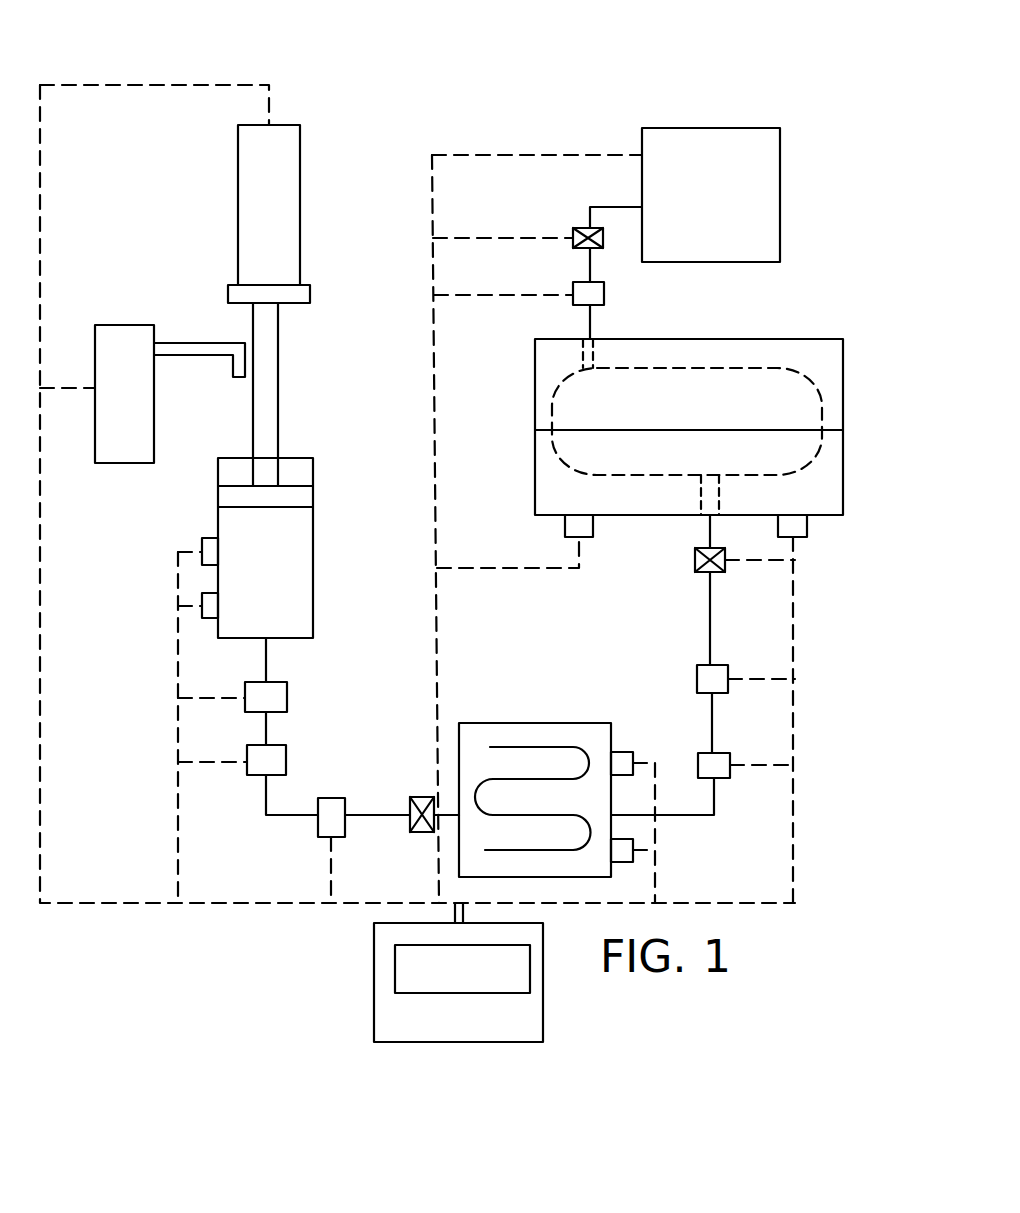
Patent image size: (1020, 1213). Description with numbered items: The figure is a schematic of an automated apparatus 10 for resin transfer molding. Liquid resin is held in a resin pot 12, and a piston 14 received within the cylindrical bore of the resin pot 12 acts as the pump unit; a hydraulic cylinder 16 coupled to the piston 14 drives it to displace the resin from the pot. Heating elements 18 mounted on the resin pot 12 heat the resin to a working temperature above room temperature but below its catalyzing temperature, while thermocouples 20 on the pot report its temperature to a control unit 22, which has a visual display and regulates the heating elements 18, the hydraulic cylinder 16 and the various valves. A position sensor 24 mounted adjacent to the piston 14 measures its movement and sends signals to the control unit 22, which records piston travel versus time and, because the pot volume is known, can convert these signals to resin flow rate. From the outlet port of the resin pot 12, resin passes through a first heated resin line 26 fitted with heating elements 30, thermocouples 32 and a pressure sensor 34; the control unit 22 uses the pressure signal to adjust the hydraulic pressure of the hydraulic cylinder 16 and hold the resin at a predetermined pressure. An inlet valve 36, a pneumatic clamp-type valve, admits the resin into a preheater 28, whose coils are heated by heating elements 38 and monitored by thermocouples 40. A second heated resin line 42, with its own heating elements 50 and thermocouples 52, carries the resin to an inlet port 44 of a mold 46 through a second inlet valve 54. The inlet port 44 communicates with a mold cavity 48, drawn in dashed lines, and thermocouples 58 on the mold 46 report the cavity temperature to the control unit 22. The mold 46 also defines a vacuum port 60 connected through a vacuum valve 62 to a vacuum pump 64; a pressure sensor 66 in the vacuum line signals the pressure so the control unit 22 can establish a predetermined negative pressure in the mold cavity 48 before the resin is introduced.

The apparatus for resin transfer molding 10 is at (556, 100).
The resin pot 12 is at (313, 557).
The piston 14 is at (278, 405).
The hydraulic cylinder 16 is at (300, 208).
The heating elements 18 is at (208, 538).
The thermocouples 20 is at (210, 618).
The control unit 22 is at (374, 962).
The position sensor 24 is at (130, 325).
The first heated resin line 26 is at (266, 730).
The preheater 28 is at (533, 723).
The heating elements 30 is at (287, 695).
The thermocouples 32 is at (257, 775).
The pressure sensor 34 is at (330, 798).
The inlet valve 36 is at (422, 797).
The heating elements 38 is at (633, 850).
The thermocouples 40 is at (622, 752).
The second heated resin line 42 is at (710, 612).
The inlet port 44 is at (710, 518).
The mold 46 is at (726, 331).
The mold cavity 48 is at (552, 464).
The heating elements 50 is at (720, 753).
The thermocouples 52 is at (697, 677).
The inlet valve 54 is at (695, 560).
The thermocouples 58 is at (807, 527).
The vacuum port 60 is at (588, 338).
The vacuum valve 62 is at (578, 228).
The vacuum pump 64 is at (705, 128).
The pressure sensor 66 is at (604, 298).